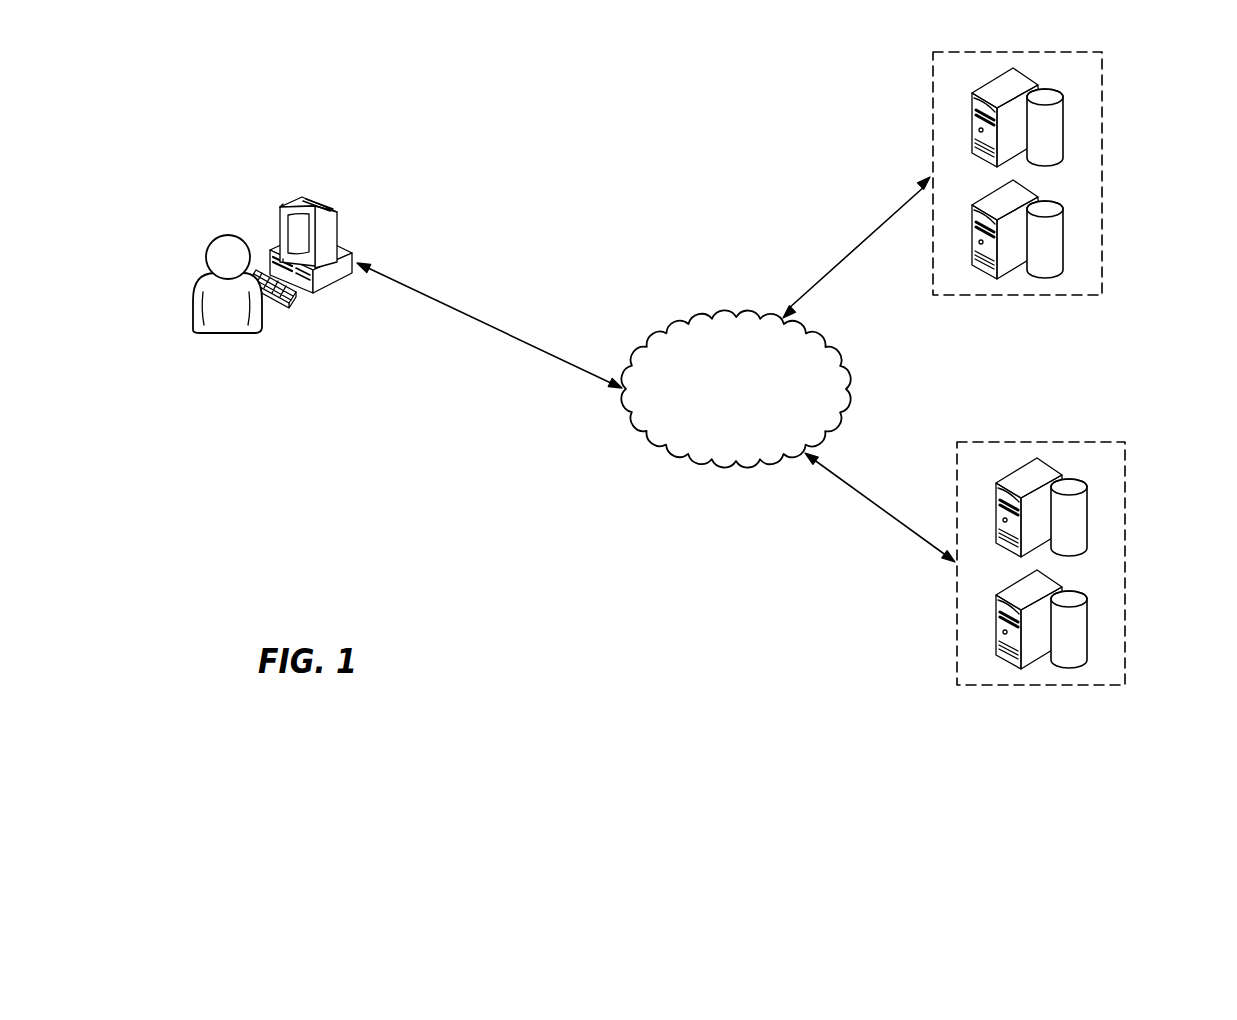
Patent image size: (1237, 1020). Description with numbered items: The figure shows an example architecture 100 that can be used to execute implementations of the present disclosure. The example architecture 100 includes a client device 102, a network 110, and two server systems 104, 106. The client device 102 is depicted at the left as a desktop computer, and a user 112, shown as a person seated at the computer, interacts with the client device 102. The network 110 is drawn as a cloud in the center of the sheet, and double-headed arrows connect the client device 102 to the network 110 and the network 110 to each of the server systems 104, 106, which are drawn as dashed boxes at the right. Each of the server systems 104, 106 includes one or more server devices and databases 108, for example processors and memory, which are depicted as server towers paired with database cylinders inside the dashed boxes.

The example architecture 100 is at (582, 68).
The client device 102 is at (281, 211).
The server system 104 is at (1102, 173).
The server system 106 is at (1125, 563).
The server devices and databases 108 is at (972, 120).
The network 110 is at (734, 318).
The user 112 is at (232, 334).